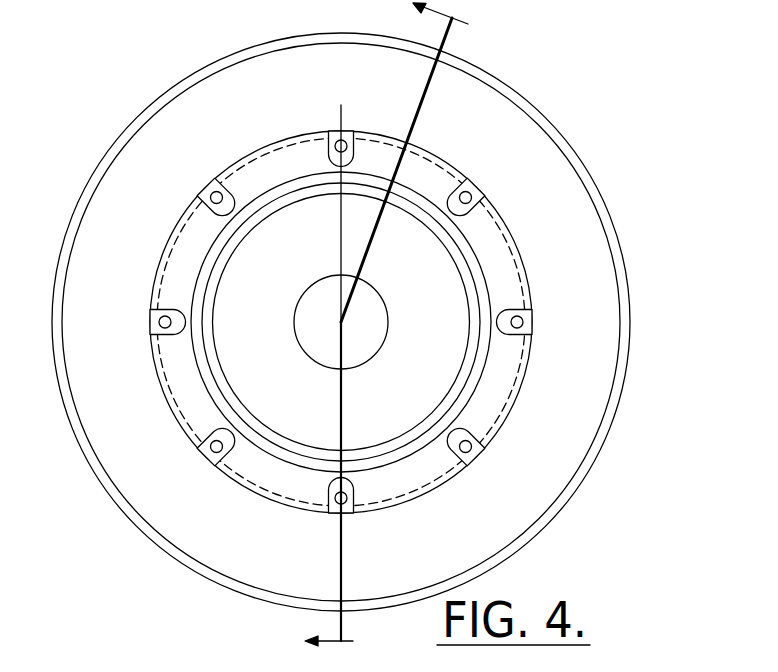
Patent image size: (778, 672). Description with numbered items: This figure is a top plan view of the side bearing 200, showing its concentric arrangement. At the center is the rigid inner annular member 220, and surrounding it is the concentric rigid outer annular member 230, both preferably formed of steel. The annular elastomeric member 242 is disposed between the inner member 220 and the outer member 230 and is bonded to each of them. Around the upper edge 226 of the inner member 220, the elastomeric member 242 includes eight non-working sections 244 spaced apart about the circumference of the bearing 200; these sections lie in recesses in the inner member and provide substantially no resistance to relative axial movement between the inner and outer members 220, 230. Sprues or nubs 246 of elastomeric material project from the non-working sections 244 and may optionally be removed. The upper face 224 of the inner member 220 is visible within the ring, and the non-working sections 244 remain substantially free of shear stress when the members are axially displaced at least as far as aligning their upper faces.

The side bearing 200 is at (387, 329).
The inner annular member 220 is at (222, 385).
The upper face 224 is at (436, 293).
The upper edge 226 is at (455, 468).
The outer annular member 230 is at (627, 372).
The annular elastomeric member 242 is at (573, 240).
The non-working sections 244 is at (212, 196).
The sprues or nubs 246 is at (214, 189).